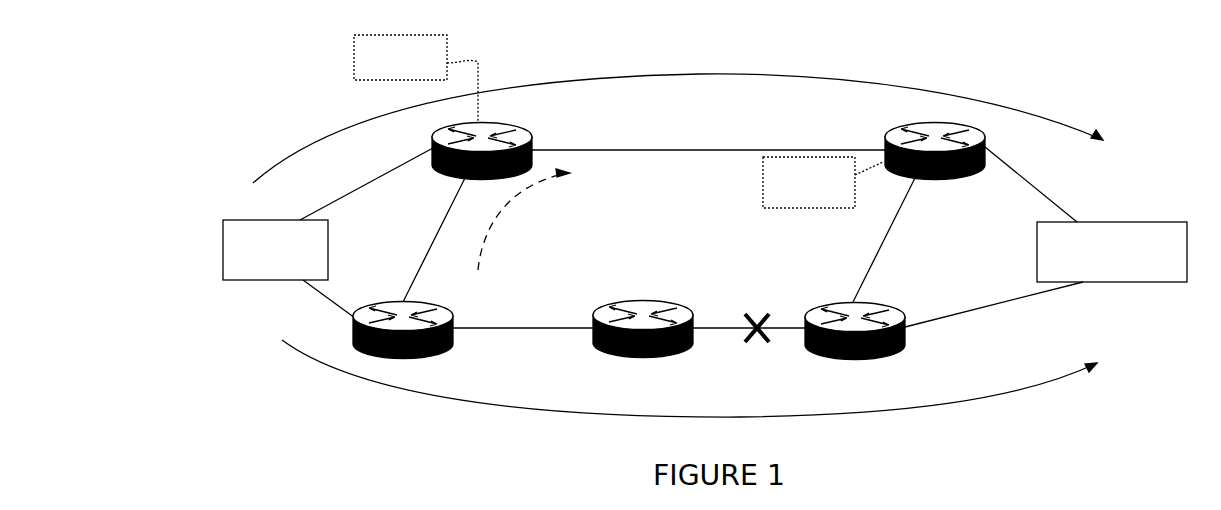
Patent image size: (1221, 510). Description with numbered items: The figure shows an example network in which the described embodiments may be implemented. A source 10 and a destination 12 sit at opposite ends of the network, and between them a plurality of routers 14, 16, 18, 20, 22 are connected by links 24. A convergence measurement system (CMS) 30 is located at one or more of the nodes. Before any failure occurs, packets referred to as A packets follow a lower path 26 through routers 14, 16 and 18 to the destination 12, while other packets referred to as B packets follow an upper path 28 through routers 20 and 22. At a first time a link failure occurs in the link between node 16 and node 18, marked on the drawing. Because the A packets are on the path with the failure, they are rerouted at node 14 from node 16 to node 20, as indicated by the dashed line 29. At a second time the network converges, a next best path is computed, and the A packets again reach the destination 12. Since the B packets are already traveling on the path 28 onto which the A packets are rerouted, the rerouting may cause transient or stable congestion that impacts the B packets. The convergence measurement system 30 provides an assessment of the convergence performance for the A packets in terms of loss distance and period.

The source 10 is at (280, 220).
The destination 12 is at (1123, 222).
The router 14 is at (433, 352).
The router 16 is at (660, 357).
The router 18 is at (872, 345).
The router 20 is at (493, 123).
The router 22 is at (933, 122).
The links 24 is at (434, 237).
The path 26 is at (418, 400).
The path 28 is at (713, 77).
The dashed line 29 is at (512, 213).
The convergence measurement system (CMS) 30 is at (354, 55).